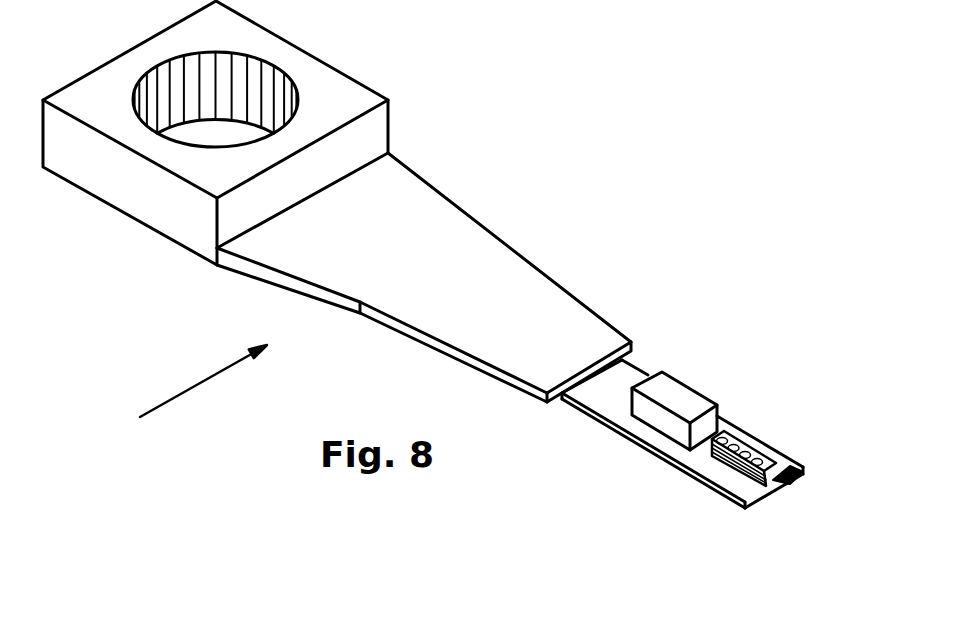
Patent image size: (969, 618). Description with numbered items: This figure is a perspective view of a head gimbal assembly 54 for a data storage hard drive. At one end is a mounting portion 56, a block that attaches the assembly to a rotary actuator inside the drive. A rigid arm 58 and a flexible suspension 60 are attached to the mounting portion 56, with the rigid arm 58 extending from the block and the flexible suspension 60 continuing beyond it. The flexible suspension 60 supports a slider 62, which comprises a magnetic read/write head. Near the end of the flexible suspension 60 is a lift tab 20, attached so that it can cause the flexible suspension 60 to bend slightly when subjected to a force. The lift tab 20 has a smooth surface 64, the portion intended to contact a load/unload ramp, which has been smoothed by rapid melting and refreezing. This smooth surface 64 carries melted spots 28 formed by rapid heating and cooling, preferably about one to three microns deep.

The lift tab 20 is at (790, 465).
The melted spots 28 is at (750, 456).
The head gimbal assembly 54 is at (182, 392).
The mounting portion 56 is at (327, 93).
The rigid arm 58 is at (433, 243).
The flexible suspension 60 is at (598, 388).
The slider 62 is at (673, 395).
The smooth surface 64 is at (793, 475).